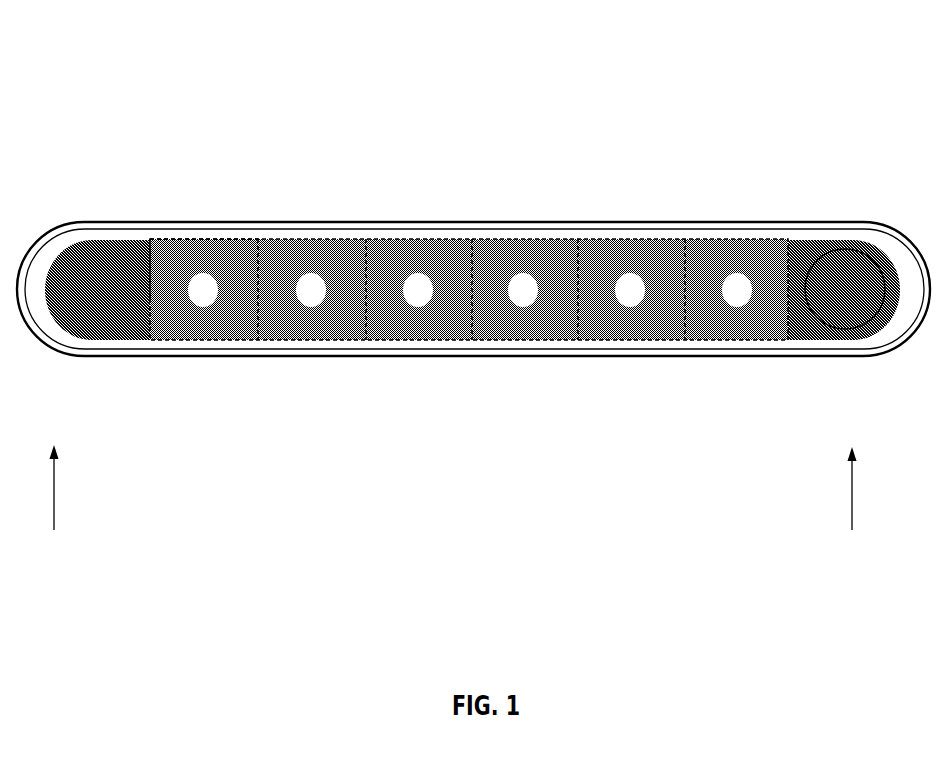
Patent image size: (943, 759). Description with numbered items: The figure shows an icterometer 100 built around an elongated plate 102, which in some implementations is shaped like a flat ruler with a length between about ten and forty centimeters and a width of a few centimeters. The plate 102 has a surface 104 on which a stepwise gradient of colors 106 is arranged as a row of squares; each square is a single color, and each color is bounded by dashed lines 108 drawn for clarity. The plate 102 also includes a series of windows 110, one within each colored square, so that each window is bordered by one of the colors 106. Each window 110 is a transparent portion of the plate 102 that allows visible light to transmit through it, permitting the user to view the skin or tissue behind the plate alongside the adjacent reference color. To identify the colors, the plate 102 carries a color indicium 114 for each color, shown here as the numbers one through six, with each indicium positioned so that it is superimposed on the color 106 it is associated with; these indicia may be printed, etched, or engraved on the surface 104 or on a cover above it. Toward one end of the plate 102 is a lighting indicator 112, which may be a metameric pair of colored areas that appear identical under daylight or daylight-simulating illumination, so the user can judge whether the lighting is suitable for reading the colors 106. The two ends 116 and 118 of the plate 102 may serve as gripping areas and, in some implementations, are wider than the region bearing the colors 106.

The icterometer 100 is at (473, 238).
The plate 102 is at (133, 355).
The surface 104 is at (466, 278).
The step wise gradient of colors 106 is at (466, 274).
The dashed lines 108 is at (258, 330).
The series of windows 110 is at (448, 338).
The lighting indicator 112 is at (831, 321).
The color indicium 114 is at (164, 254).
The end 116 is at (48, 519).
The end 118 is at (846, 520).